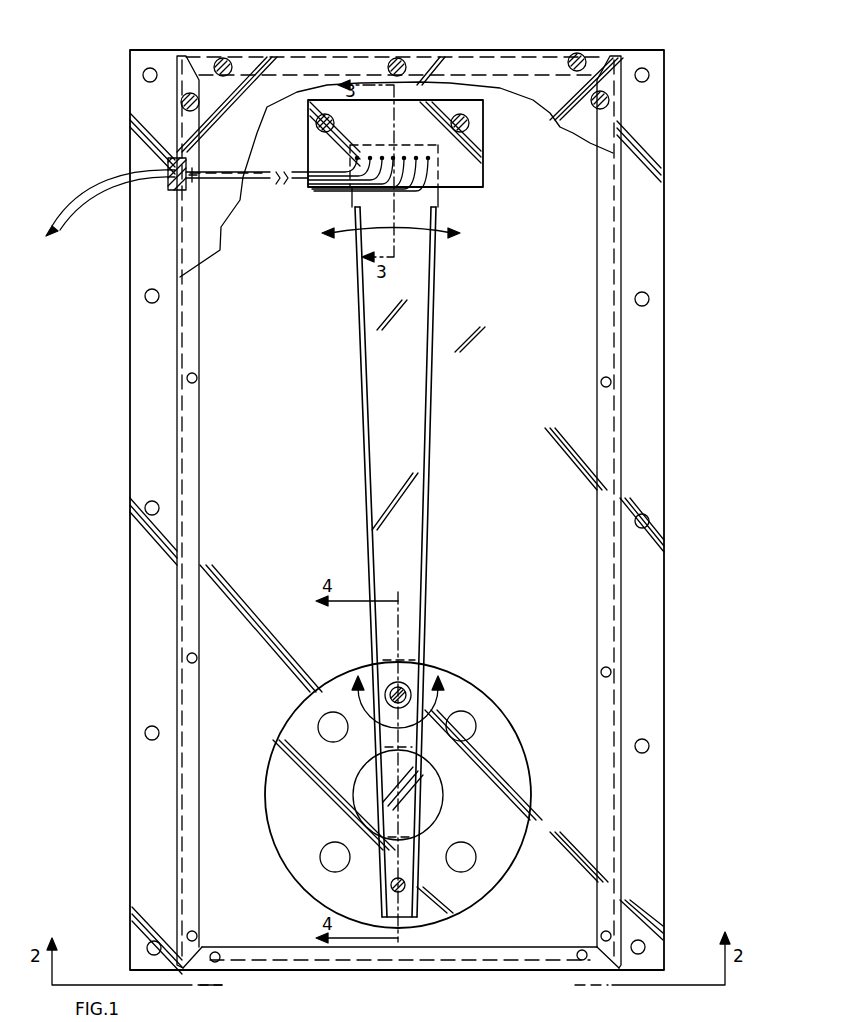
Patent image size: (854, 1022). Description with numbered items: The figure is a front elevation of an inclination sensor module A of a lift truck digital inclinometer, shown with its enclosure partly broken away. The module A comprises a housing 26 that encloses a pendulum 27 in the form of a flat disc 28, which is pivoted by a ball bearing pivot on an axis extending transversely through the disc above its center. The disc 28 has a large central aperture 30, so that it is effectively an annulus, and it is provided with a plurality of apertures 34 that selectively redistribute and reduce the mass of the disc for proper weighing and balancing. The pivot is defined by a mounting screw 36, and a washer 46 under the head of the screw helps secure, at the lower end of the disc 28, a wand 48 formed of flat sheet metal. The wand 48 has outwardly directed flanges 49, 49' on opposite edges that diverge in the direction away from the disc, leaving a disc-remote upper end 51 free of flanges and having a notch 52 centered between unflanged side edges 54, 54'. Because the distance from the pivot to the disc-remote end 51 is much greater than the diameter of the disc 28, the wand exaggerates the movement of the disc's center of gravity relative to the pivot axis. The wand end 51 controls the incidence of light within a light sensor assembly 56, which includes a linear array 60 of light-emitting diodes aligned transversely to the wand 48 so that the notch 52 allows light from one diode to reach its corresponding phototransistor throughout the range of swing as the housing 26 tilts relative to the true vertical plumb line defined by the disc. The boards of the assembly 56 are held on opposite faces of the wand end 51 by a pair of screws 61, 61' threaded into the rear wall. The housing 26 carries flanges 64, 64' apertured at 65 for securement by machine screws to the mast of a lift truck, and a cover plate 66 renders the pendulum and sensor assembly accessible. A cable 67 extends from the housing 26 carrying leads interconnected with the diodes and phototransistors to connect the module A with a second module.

The inclination sensor module A is at (672, 78).
The housing 26 is at (621, 885).
The pendulum 27 is at (468, 667).
The flat disc 28 is at (525, 778).
The central aperture 30 is at (432, 812).
The apertures 34 is at (325, 723).
The mounting screw 36 is at (390, 688).
The washer 46 is at (405, 688).
The wand 48 is at (418, 617).
The flange 49 is at (351, 562).
The flange 49' is at (432, 562).
The disc-remote upper end 51 is at (432, 200).
The notch 52 is at (392, 143).
The side edge 54 is at (303, 149).
The side edge 54' is at (487, 152).
The light sensor assembly 56 is at (320, 207).
The linear array of light-emitting diodes 60 is at (437, 163).
The screw 61 is at (317, 134).
The screw 61' is at (475, 132).
The flange 64 is at (132, 512).
The flange 64' is at (661, 512).
The apertures 65 is at (143, 76).
The cover plate 66 is at (547, 88).
The cable 67 is at (85, 180).